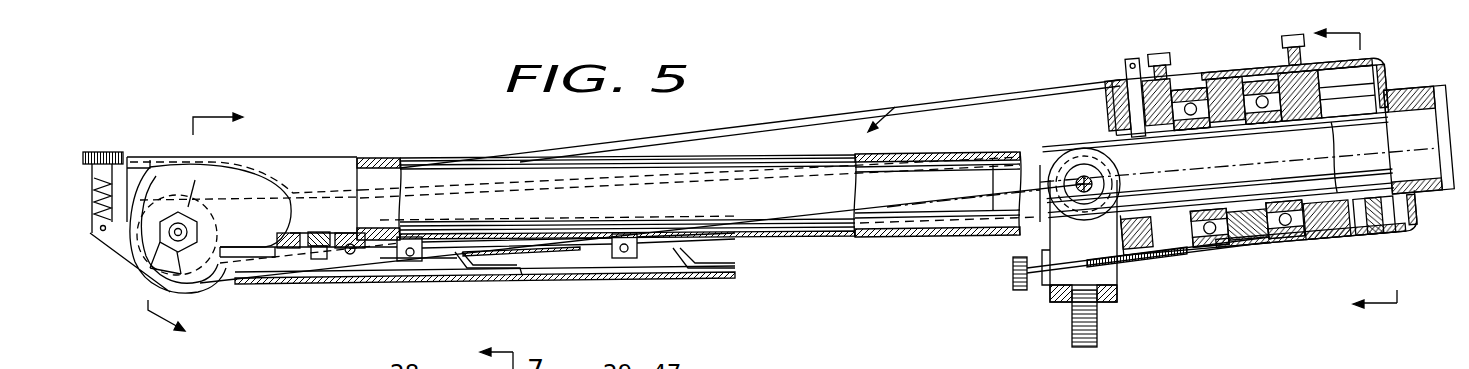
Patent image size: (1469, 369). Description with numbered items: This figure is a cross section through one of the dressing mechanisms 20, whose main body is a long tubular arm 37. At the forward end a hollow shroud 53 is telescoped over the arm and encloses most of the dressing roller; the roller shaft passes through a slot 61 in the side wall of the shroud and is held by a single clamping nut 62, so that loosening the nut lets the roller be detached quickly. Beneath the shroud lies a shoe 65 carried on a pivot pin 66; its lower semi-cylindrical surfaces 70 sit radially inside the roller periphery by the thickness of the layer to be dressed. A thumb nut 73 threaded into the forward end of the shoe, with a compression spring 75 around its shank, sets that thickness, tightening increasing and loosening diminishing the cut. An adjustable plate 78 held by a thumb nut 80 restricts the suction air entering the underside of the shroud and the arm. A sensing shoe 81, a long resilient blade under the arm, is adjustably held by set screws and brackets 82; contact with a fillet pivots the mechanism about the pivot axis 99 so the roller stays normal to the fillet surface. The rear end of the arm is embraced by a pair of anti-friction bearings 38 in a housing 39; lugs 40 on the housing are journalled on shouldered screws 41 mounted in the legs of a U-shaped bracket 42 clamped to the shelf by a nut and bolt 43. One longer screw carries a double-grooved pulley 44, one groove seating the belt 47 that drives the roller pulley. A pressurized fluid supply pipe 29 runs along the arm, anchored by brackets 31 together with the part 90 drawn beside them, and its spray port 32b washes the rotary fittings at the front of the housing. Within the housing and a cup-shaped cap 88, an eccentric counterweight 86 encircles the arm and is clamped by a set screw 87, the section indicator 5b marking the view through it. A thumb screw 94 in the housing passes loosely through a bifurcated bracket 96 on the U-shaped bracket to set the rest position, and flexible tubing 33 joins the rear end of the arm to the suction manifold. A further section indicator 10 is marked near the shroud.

The thumb nut 73 is at (112, 152).
The compression spring 75 is at (108, 231).
The shroud 53 is at (310, 158).
The shoe 65 is at (140, 283).
The clamping nut 62 is at (197, 232).
The slot 61 is at (181, 270).
The semi-cylindrical surfaces 70 is at (190, 296).
The section line 10 is at (170, 228).
The adjustable plate 78 is at (284, 250).
The thumb nut 80 is at (316, 262).
The pivot pin 66 is at (349, 256).
The tubular arm 37 is at (734, 153).
The pivot axis 99 is at (958, 198).
The belt 47 is at (523, 178).
The pressurized fluid supply pipe 29 is at (820, 116).
The dressing mechanism 20 is at (887, 107).
The set screws and brackets 82 is at (412, 237).
The sensing shoe 81 is at (644, 284).
The pulley 44 is at (1058, 160).
The U-shaped bracket 42 is at (1118, 295).
The nut and bolt 43 is at (1098, 334).
The thumb screw 94 is at (1013, 275).
The bifurcated bracket 96 is at (1032, 292).
The lugs 40 is at (1120, 159).
The shouldered screws 41 is at (1120, 192).
The flexible tubing 33 is at (1443, 193).
The cup-shaped cap 88 is at (1393, 84).
The spray port 32b is at (1120, 75).
The pin 90 is at (1140, 60).
The brackets 31 is at (1175, 60).
The housing 39 is at (1246, 62).
The anti-friction bearings 38 is at (1288, 250).
The eccentric counterweight 86 is at (1325, 236).
The set screw 87 is at (1372, 236).
The section line 5b is at (1381, 166).